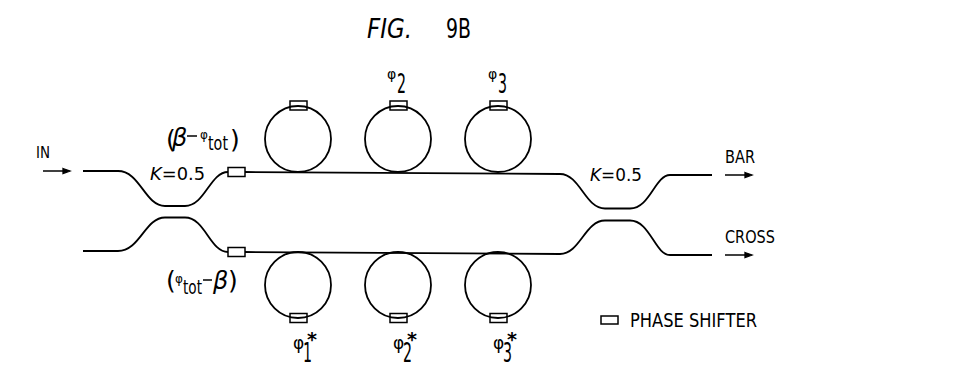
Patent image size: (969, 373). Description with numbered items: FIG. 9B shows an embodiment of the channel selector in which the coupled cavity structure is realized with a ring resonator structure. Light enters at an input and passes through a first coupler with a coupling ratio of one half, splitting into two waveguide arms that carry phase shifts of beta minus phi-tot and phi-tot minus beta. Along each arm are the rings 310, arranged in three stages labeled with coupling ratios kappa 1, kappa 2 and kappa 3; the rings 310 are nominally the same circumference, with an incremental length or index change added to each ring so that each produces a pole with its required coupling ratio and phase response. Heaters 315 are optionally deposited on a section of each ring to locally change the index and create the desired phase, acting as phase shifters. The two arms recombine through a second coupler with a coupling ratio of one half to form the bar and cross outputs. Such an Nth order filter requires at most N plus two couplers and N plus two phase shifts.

The rings 310 is at (428, 121).
The heaters 315 is at (407, 104).
The first ring resonator stage (K1) 1 is at (298, 212).
The second ring resonator stage (K2) 2 is at (457, 195).
The third ring resonator stage (K3) 3 is at (498, 214).